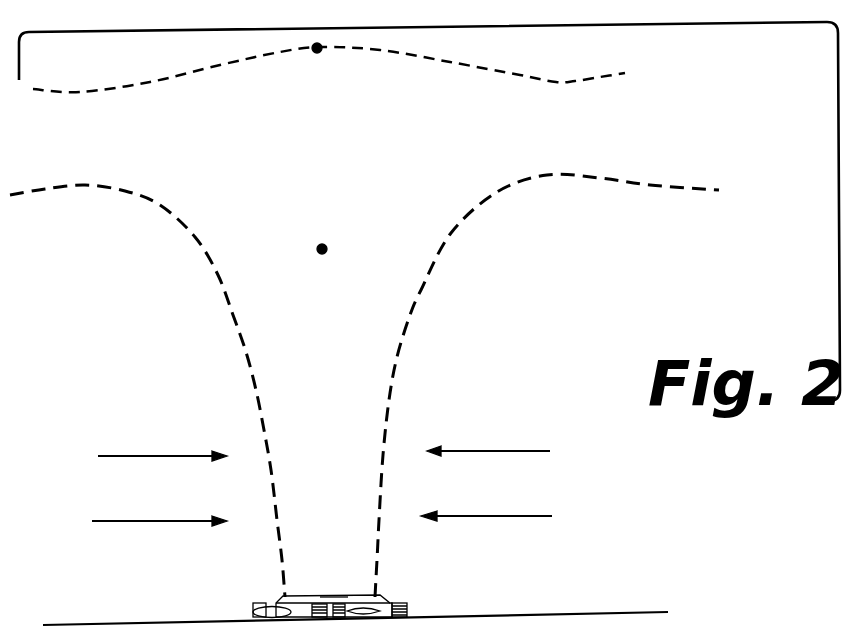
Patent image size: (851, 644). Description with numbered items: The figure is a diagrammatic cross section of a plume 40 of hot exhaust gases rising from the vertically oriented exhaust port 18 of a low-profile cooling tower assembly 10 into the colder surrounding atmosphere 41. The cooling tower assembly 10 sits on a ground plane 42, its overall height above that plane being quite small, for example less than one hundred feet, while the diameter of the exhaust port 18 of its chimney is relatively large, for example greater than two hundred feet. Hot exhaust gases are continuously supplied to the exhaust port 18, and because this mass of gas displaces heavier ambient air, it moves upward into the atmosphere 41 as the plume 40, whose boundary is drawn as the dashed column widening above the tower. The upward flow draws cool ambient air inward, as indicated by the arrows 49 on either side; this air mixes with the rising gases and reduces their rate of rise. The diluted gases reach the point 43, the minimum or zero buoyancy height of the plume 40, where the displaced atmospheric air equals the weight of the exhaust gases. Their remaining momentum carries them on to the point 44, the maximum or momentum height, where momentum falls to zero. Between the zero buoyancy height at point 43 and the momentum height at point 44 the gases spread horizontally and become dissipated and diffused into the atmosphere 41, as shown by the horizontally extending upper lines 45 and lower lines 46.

The cooling tower assembly 10 is at (430, 592).
The exhaust port 18 is at (330, 597).
The plume 40 is at (234, 316).
The atmosphere 41 is at (193, 407).
The ground plane 42 is at (228, 622).
The point 43 is at (327, 247).
The point 44 is at (320, 53).
The upper lines 45 is at (68, 89).
The lower lines 46 is at (77, 187).
The arrows 49 is at (172, 520).